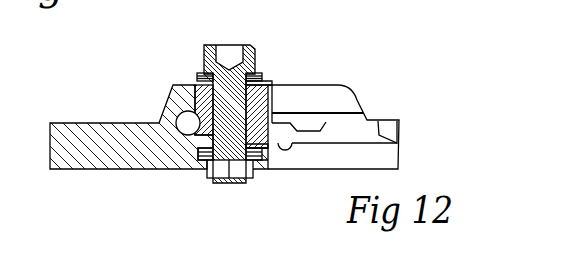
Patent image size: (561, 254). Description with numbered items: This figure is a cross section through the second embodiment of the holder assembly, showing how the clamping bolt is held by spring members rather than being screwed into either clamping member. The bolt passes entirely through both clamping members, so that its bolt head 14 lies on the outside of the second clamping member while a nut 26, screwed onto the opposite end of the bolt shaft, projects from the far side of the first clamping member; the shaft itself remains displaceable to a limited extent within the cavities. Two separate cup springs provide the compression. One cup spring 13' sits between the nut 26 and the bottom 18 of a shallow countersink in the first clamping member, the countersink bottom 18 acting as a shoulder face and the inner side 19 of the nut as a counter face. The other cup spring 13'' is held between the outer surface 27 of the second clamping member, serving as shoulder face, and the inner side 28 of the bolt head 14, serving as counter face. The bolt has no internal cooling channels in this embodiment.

The bolt head 14 is at (253, 50).
The cup spring 13'' is at (280, 61).
The cup spring 13' is at (280, 172).
The outer surface of the second clamping member 27 is at (263, 78).
The inner side of the bolt head 28 is at (200, 79).
The bottom of the countersink 18 is at (203, 161).
The inner side of the nut 19 is at (258, 162).
The nut 26 is at (212, 169).